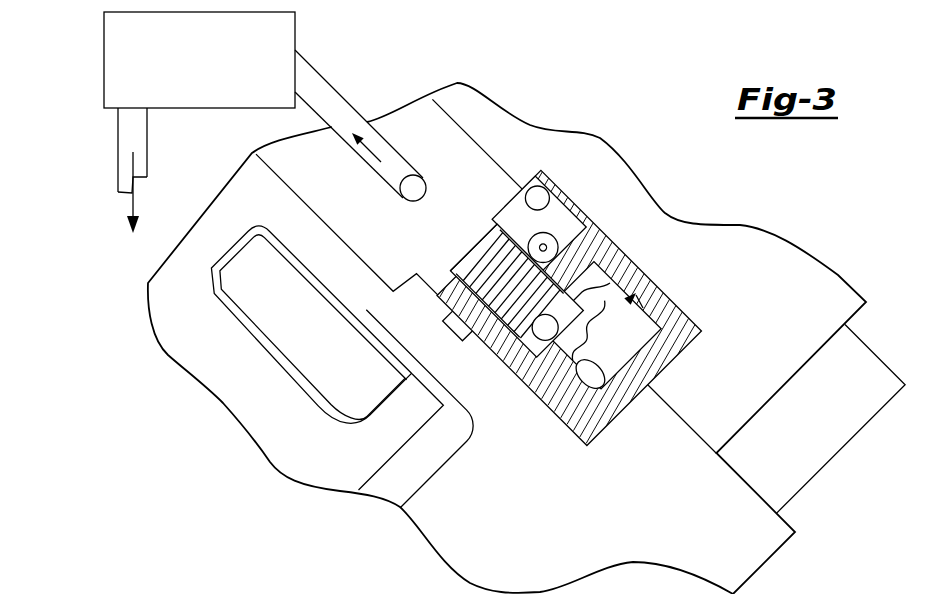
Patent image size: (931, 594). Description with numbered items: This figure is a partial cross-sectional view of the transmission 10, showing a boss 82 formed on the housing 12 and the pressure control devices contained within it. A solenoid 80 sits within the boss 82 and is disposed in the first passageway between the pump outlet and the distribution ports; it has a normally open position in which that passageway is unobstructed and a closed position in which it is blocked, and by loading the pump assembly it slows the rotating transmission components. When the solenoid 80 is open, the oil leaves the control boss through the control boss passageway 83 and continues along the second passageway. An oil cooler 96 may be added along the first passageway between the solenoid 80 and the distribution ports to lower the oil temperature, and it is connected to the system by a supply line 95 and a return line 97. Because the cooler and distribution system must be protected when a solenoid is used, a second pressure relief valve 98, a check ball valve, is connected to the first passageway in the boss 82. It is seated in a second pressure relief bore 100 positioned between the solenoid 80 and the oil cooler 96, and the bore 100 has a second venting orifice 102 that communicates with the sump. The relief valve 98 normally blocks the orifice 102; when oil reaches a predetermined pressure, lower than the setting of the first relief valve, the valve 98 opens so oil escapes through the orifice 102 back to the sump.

The transmission fluid cooling system 10 is at (612, 97).
The housing 12 is at (665, 112).
The solenoid 80 is at (569, 400).
The boss 82 is at (690, 287).
The control boss passageway 83 is at (532, 340).
The supply line 95 is at (320, 75).
The oil cooler 96 is at (103, 72).
The return line 97 is at (147, 143).
The second pressure relief valve 98 is at (488, 243).
The second pressure relief bore 100 is at (495, 250).
The second venting orifice 102 is at (546, 245).